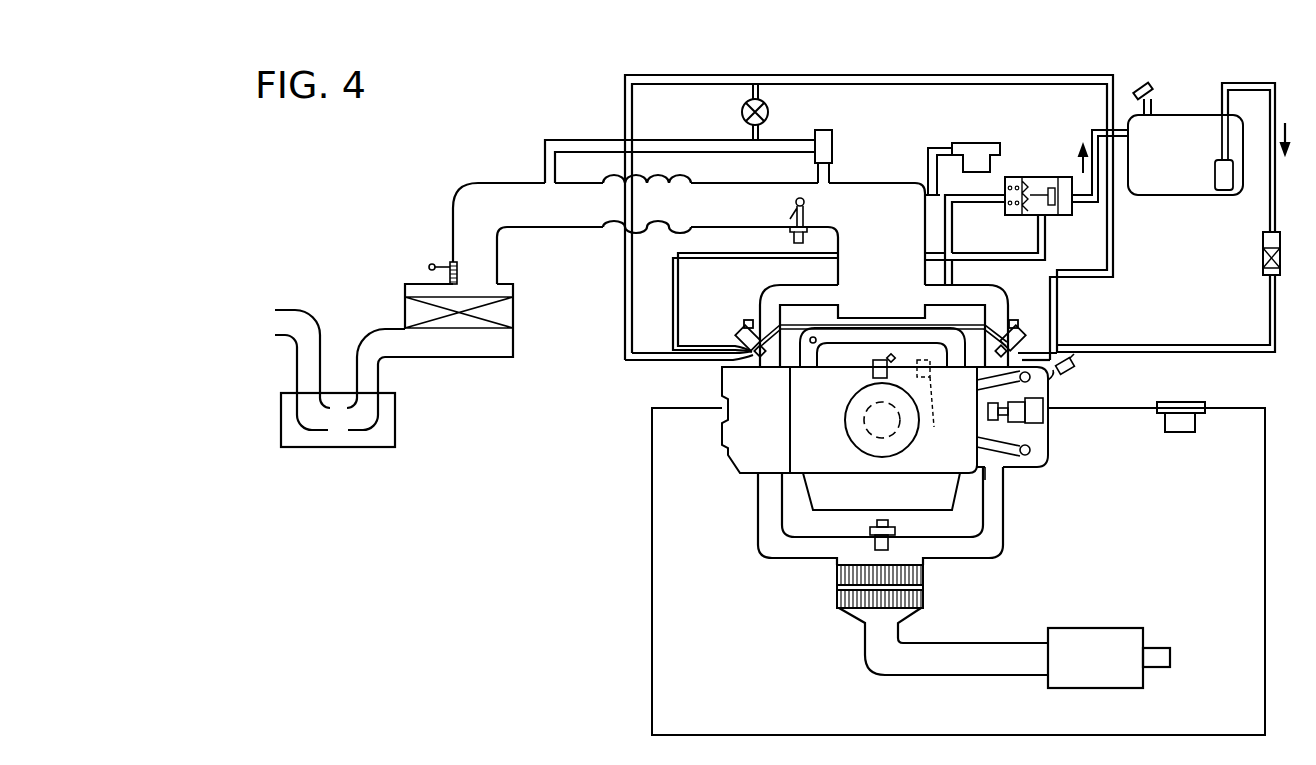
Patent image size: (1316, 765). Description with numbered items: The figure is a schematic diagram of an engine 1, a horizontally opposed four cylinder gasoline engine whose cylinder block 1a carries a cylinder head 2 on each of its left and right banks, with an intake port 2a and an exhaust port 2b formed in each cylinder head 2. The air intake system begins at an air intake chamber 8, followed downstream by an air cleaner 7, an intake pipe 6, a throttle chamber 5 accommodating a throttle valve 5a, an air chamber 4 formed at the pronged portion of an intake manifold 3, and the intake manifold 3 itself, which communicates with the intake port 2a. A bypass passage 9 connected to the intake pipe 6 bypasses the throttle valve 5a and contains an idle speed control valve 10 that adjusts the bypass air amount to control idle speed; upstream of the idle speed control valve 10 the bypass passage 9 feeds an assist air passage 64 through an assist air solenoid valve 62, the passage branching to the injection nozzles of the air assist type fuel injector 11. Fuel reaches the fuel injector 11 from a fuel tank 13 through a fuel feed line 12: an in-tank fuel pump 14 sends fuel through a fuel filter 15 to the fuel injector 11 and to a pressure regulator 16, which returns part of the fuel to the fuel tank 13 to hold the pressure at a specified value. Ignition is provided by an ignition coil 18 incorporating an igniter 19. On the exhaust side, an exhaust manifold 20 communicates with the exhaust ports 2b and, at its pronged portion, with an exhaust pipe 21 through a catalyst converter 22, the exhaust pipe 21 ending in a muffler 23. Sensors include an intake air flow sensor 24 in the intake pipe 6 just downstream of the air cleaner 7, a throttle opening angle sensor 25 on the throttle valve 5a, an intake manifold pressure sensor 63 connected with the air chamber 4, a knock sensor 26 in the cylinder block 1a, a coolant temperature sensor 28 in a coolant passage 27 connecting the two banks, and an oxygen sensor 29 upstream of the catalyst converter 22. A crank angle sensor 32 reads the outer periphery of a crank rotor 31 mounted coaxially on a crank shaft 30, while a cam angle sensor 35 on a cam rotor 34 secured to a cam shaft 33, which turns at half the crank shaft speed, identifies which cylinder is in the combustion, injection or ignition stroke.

The engine 1 is at (729, 501).
The cylinder block 1a is at (807, 423).
The cylinder head 2 is at (1048, 455).
The intake port 2a is at (973, 377).
The exhaust port 2b is at (1012, 470).
The intake manifold 3 is at (1000, 306).
The air chamber 4 is at (893, 243).
The throttle chamber 5 is at (903, 193).
The throttle valve 5a is at (800, 198).
The intake pipe 6 is at (588, 229).
The air cleaner 7 is at (512, 314).
The air intake chamber 8 is at (395, 422).
The bypass passage 9 is at (562, 139).
The idle speed control valve 10 is at (830, 130).
The fuel injector 11 is at (745, 320).
The fuel feed line 12 is at (1190, 345).
The fuel tank 13 is at (1188, 115).
The fuel pump 14 is at (1160, 196).
The fuel filter 15 is at (1263, 240).
The pressure regulator 16 is at (1035, 177).
The ignition coil 18 is at (1180, 432).
The igniter 19 is at (1198, 447).
The exhaust manifold 20 is at (1003, 525).
The exhaust pipe 21 is at (1014, 647).
The catalyst converter 22 is at (923, 575).
The muffler 23 is at (1105, 630).
The intake air flow sensor 24 is at (458, 268).
The throttle opening angle sensor 25 is at (812, 238).
The knock sensor 26 is at (946, 401).
The coolant passage 27 is at (898, 342).
The coolant temperature sensor 28 is at (816, 338).
The oxygen sensor 29 is at (883, 520).
The crank shaft 30 is at (913, 440).
The crank rotor 31 is at (848, 424).
The crank angle sensor 32 is at (873, 370).
The cam shaft 33 is at (1043, 396).
The cam rotor 34 is at (1053, 382).
The cam angle sensor 35 is at (1075, 366).
The assist air solenoid valve 62 is at (742, 112).
The intake manifold pressure sensor 63 is at (978, 143).
The assist air passage 64 is at (826, 75).